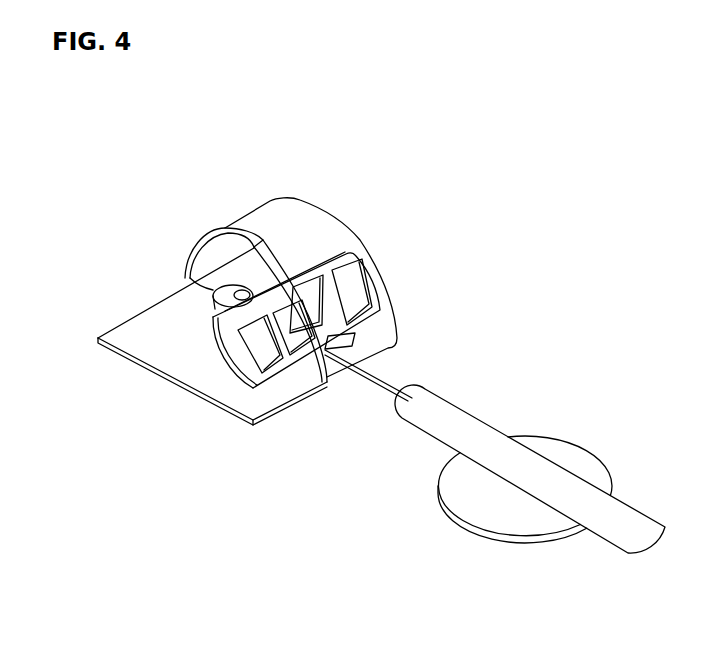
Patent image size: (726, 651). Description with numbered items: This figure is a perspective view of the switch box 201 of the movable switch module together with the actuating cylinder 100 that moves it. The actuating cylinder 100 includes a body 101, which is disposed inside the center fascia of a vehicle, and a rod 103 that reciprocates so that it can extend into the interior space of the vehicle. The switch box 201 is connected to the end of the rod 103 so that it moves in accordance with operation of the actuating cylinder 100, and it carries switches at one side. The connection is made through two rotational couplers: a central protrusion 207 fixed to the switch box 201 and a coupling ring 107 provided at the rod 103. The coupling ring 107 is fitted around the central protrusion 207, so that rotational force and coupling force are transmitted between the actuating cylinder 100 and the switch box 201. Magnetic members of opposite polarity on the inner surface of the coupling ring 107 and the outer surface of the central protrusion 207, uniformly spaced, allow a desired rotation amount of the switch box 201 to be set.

The actuating cylinder 100 is at (586, 422).
The body 101 is at (483, 437).
The rod 103 is at (396, 383).
The coupling ring 107 is at (185, 278).
The switch box 201 is at (306, 220).
The central protrusion 207 is at (243, 295).